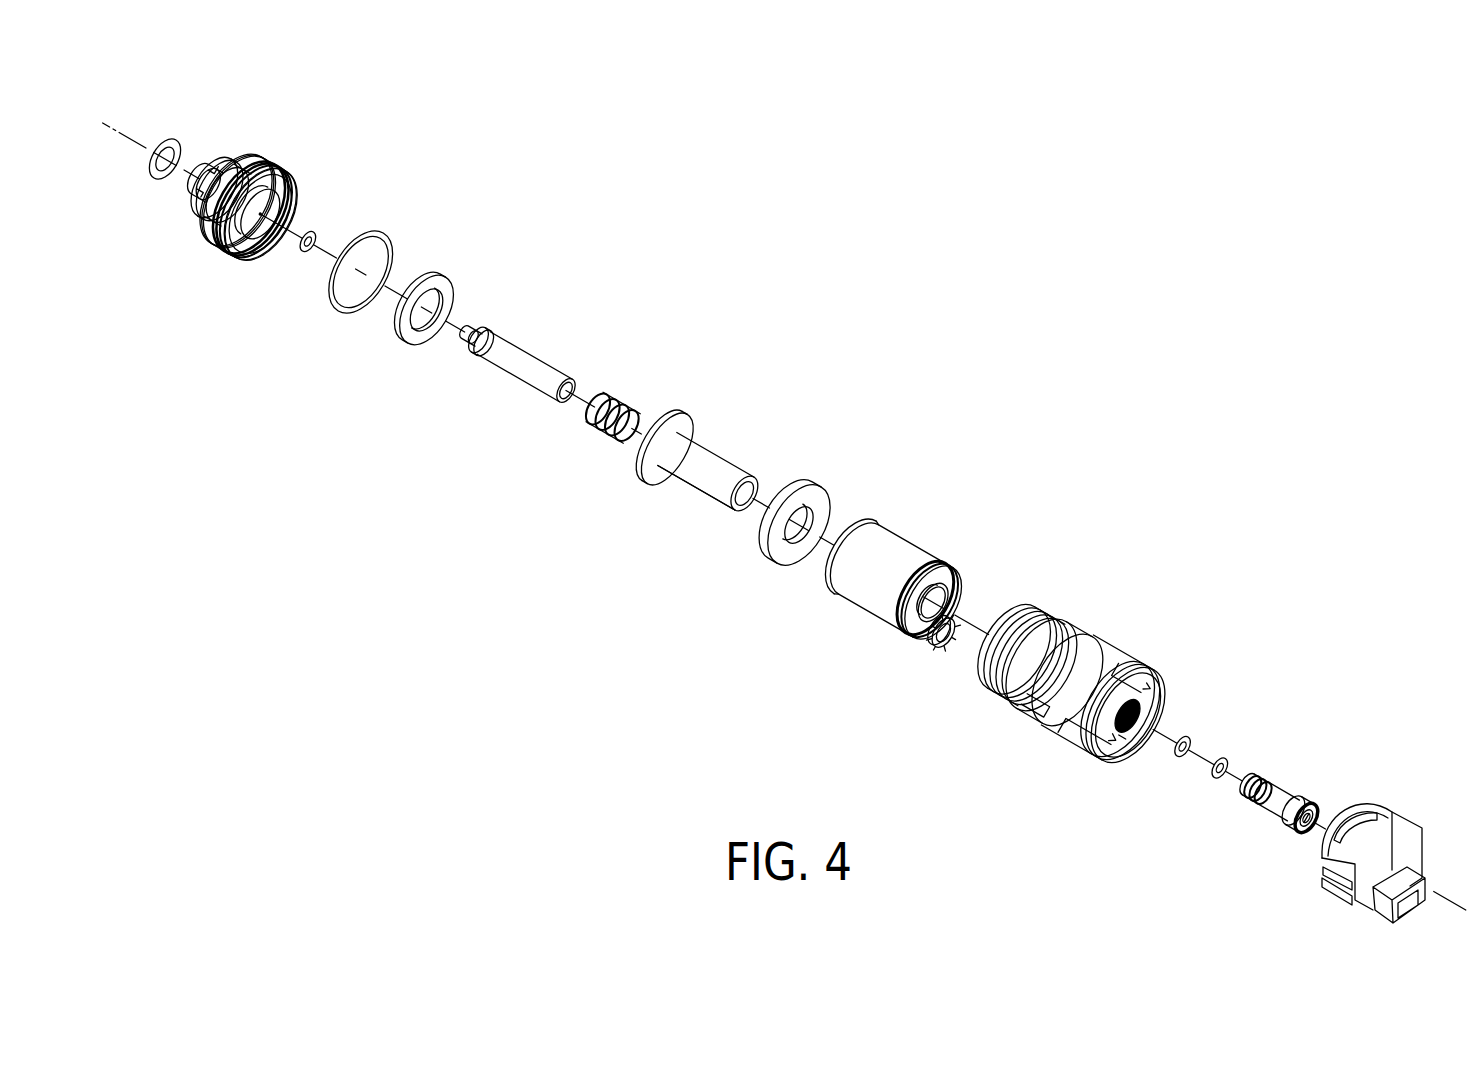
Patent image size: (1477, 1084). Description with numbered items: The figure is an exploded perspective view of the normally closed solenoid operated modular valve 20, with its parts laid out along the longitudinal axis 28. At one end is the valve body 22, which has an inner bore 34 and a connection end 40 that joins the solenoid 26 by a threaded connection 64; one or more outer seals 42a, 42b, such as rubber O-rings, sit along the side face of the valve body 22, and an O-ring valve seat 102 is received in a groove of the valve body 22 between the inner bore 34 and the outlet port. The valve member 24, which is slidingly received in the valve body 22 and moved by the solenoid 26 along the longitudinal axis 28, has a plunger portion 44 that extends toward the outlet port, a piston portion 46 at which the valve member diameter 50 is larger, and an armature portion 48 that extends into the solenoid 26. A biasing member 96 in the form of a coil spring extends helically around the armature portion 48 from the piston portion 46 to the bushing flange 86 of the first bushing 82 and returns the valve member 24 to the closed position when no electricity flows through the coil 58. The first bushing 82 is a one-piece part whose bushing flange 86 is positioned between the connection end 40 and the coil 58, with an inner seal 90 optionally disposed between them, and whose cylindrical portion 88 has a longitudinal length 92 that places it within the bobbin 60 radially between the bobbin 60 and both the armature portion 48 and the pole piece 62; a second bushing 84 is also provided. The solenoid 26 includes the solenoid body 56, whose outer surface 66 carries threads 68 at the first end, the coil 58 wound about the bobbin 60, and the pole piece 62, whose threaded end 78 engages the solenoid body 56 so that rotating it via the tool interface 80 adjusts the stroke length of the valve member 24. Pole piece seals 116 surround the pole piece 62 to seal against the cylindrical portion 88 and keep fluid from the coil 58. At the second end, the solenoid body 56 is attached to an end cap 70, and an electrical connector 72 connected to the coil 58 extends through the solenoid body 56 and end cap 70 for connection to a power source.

The normally closed solenoid operated modular valve 20 is at (1057, 290).
The valve body 22 is at (317, 122).
The valve member 24 is at (593, 312).
The solenoid 26 is at (966, 510).
The longitudinal axis 28 is at (123, 132).
The inner bore 34 is at (295, 204).
The connection end 40 is at (247, 253).
The outer seal 42a is at (178, 150).
The outer seal 42b is at (337, 320).
The plunger portion 44 is at (483, 327).
The piston portion 46 is at (473, 367).
The armature portion 48 is at (520, 373).
The valve member diameter 50 is at (582, 392).
The solenoid body 56 is at (1146, 590).
The coil 58 is at (875, 587).
The bobbin 60 is at (953, 580).
The pole piece 62 is at (1303, 758).
The threaded connection 64 is at (215, 242).
The outer surface 66 is at (1043, 710).
The threads 68 is at (1030, 605).
The end cap 70 is at (1430, 790).
The electrical connector 72 is at (945, 653).
The threaded end 78 is at (1307, 800).
The tool interface 80 is at (1310, 833).
The first bushing 82 is at (758, 393).
The second bushing 84 is at (847, 443).
The bushing flange 86 is at (683, 425).
The cylindrical portion 88 is at (723, 475).
The inner seal 90 is at (443, 277).
The longitudinal length 92 is at (731, 509).
The biasing member 96 is at (577, 457).
The O-ring valve seat 102 is at (312, 242).
The pole piece seals 116 is at (1228, 760).